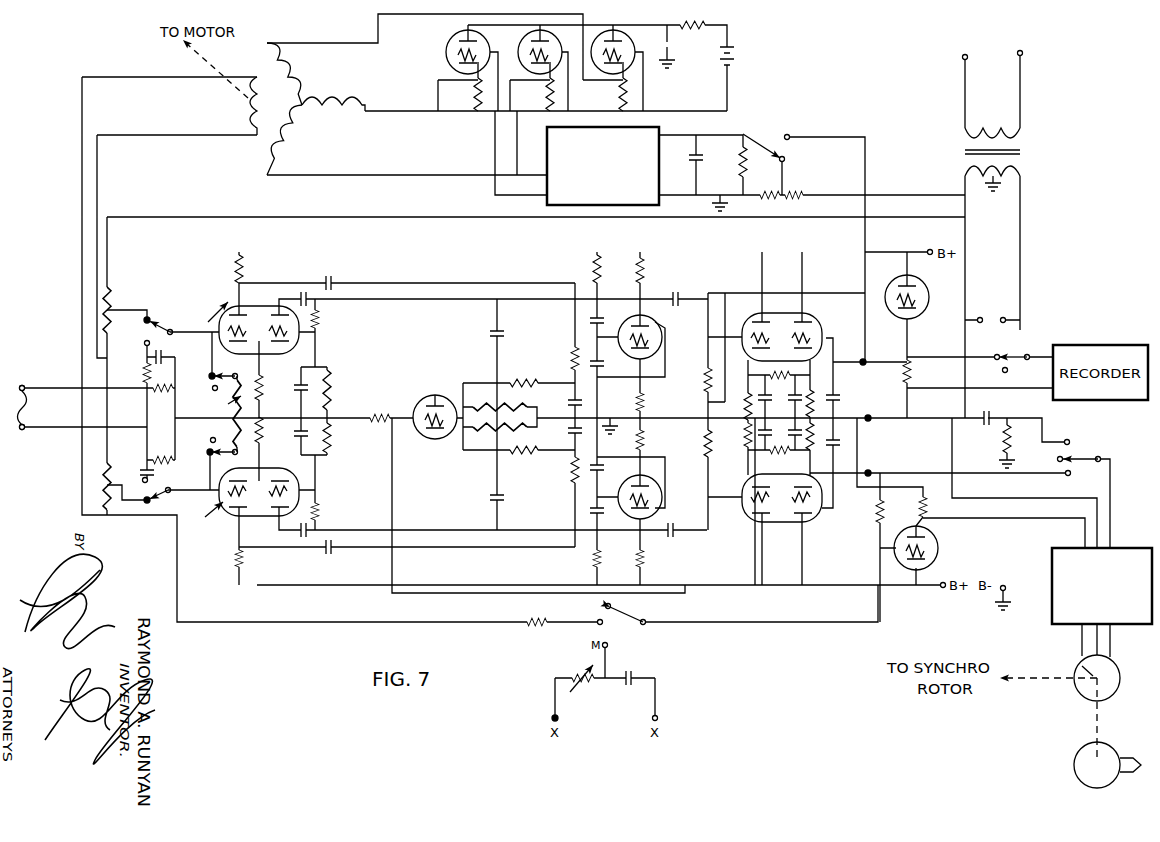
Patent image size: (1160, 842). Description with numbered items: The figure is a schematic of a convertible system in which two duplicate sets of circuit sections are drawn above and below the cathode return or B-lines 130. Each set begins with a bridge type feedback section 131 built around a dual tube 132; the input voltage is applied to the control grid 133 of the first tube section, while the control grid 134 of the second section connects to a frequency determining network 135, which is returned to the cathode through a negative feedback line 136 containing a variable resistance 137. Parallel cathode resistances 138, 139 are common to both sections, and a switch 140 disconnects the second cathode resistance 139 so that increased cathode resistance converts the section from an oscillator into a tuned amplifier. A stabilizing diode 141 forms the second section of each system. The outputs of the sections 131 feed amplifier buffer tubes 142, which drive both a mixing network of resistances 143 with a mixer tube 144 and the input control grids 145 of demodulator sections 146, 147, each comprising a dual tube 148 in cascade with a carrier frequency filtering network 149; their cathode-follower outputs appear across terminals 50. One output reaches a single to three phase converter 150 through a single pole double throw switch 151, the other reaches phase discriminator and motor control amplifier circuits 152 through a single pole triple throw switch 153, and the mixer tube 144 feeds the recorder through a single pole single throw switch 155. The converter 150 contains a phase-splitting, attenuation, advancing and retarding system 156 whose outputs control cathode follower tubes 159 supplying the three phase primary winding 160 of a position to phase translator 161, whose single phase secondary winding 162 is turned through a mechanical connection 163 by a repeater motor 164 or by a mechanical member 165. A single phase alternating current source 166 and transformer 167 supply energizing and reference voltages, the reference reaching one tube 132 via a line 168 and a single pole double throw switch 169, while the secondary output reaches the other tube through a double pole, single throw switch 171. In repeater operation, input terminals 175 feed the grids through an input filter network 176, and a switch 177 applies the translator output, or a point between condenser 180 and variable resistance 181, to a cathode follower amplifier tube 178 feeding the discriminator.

The terminals 50 is at (879, 414).
The cathode return or B-lines 130 is at (349, 410).
The bridge type feedback section 131 is at (266, 413).
The dual tube 132 is at (291, 351).
The control grid 133 is at (202, 482).
The control grid 134 is at (305, 350).
The frequency determining network 135 is at (320, 380).
The negative feedback line 136 is at (209, 410).
The variable resistance 137 is at (202, 408).
The cathode resistance 138 is at (266, 436).
The second cathode resistance 139 is at (223, 414).
The switch 140 is at (211, 411).
The stabilizing diode 141 is at (450, 440).
The amplifier buffer tube 142 is at (655, 322).
The network of resistances 143 is at (706, 383).
The mixer tube 144 is at (915, 308).
The input control grid 145 is at (727, 329).
The demodulator section 146 is at (841, 286).
The demodulator section 147 is at (827, 545).
The dual tube 148 is at (824, 418).
The carrier frequency filtering network 149 is at (816, 394).
The single to three phase converter 150 is at (605, 68).
The single pole double throw switch 151 is at (764, 143).
The phase discriminator and motor control amplifier circuits 152 is at (1052, 612).
The single pole triple throw switch 153 is at (1080, 452).
The single pole single throw switch 155 is at (1012, 353).
The phase-splitting, attenuation, advancing and retarding system 156 is at (660, 148).
The cathode follower tube 159 is at (450, 46).
The three phase primary winding 160 is at (301, 102).
The position to phase translator 161 is at (263, 139).
The single phase secondary winding 162 is at (262, 80).
The mechanical connection 163 is at (200, 52).
The repeater motor 164 is at (1080, 702).
The mechanical member 165 is at (1073, 768).
The single phase alternating current source 166 is at (1017, 56).
The transformer 167 is at (1021, 235).
The line 168 is at (123, 240).
The single pole double throw switch 169 is at (165, 322).
The double pole, single throw switch 171 is at (154, 503).
The input terminals 175 is at (39, 408).
The input filter network 176 is at (147, 413).
The switch 177 is at (637, 613).
The cathode follower amplifier tube 178 is at (932, 546).
The condenser 180 is at (641, 690).
The variable resistance 181 is at (589, 686).